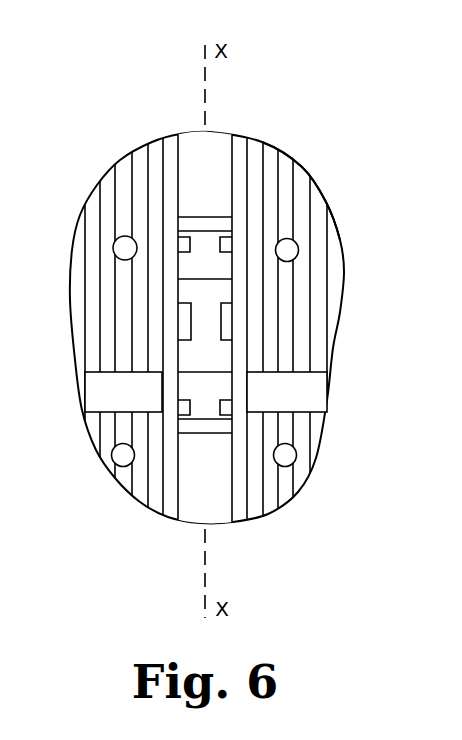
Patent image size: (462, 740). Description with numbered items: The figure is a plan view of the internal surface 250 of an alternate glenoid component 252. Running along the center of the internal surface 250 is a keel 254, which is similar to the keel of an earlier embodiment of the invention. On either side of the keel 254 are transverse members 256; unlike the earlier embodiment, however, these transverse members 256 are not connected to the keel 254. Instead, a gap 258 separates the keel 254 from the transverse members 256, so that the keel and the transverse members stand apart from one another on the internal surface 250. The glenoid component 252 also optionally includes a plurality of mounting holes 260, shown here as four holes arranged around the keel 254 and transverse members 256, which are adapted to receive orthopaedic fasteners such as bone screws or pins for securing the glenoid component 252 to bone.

The internal surface 250 is at (258, 168).
The glenoid component 252 is at (315, 178).
The keel 254 is at (193, 158).
The transverse members 256 is at (297, 392).
The gap 258 is at (172, 418).
The mounting holes 260 is at (125, 248).